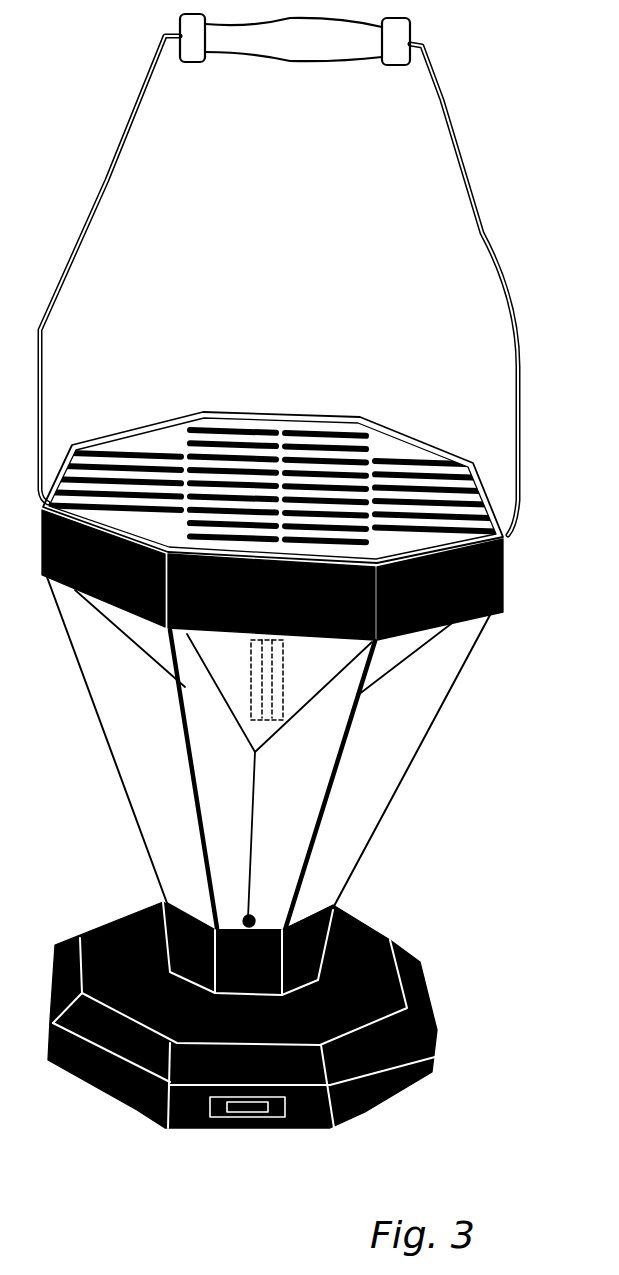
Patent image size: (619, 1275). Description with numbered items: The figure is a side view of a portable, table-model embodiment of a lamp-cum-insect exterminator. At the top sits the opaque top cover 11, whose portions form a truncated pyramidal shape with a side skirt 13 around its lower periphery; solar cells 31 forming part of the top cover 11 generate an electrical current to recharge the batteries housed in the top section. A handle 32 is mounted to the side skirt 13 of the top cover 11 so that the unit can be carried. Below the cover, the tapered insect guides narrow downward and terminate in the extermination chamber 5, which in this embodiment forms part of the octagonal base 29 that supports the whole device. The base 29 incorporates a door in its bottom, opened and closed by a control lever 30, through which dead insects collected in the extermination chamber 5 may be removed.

The handle 32 is at (483, 233).
The top cover 11 is at (165, 425).
The solar cells 31 is at (318, 445).
The side skirt 13 is at (504, 569).
The extermination chamber 5 is at (343, 915).
The octagonal base 29 is at (417, 962).
The control lever 30 is at (263, 1115).